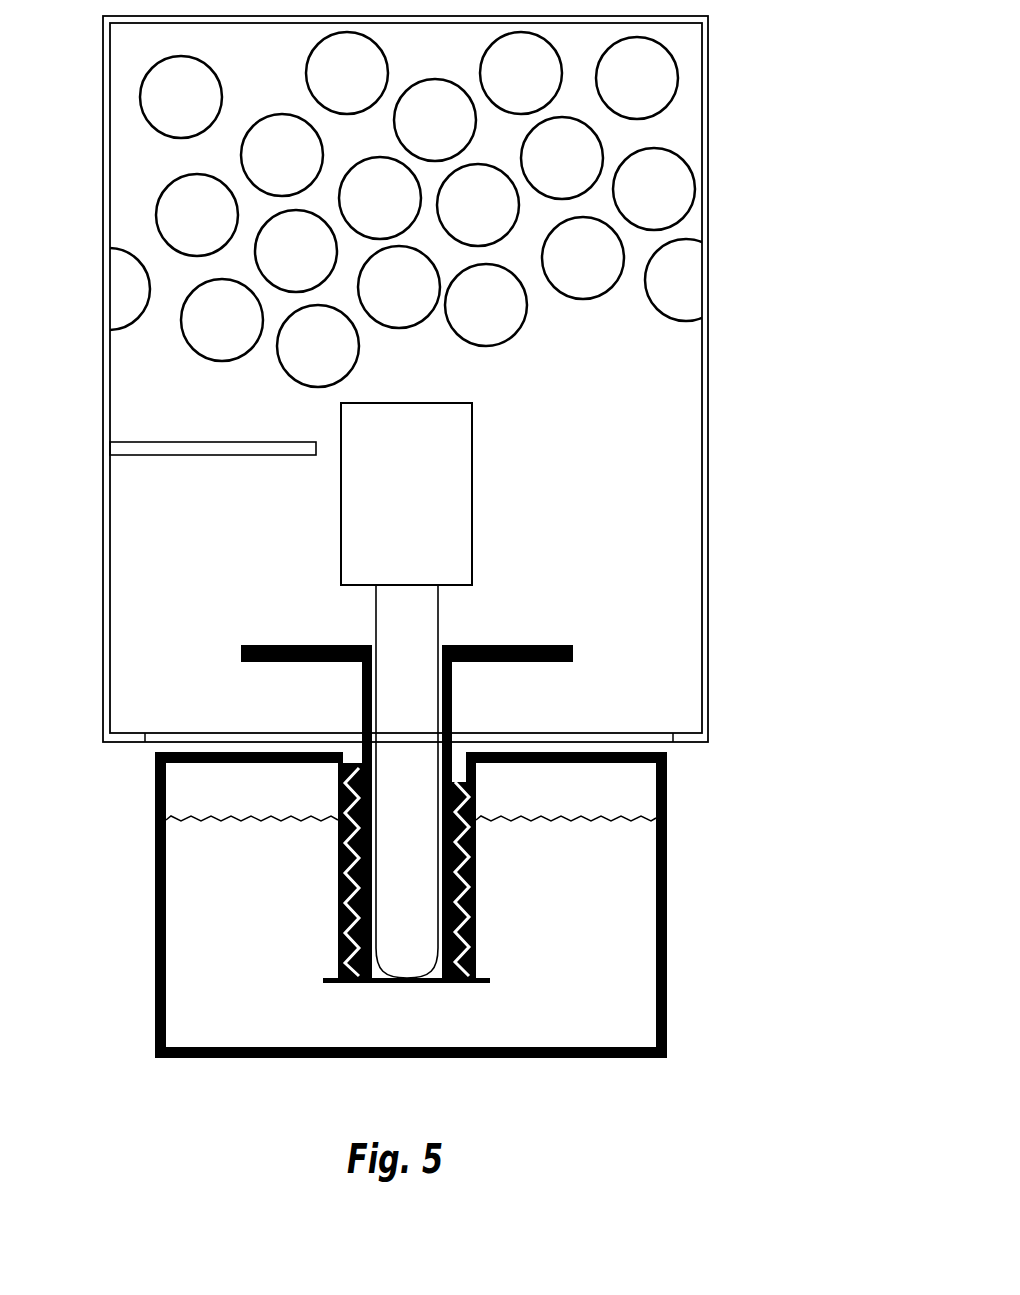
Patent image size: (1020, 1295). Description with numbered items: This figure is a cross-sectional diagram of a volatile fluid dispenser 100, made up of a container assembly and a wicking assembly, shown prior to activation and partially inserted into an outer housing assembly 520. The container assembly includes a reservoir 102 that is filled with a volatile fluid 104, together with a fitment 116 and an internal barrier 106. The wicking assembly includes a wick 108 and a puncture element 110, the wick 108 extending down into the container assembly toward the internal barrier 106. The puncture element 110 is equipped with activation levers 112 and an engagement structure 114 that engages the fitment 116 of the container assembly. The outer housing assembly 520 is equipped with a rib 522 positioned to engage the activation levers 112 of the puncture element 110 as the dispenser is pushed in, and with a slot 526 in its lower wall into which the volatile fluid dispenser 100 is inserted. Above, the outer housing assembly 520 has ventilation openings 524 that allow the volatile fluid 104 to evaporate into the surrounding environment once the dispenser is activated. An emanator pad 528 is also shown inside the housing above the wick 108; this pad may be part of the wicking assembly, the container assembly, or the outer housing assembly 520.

The volatile fluid dispenser 100 is at (518, 905).
The reservoir 102 is at (592, 793).
The volatile fluid 104 is at (464, 1033).
The internal barrier 106 is at (378, 982).
The wick 108 is at (400, 867).
The puncture element 110 is at (338, 890).
The activation levers 112 is at (241, 652).
The engagement structure 114 is at (478, 955).
The fitment 116 is at (338, 947).
The outer housing assembly 520 is at (705, 425).
The rib 522 is at (194, 448).
The ventilation openings 524 is at (653, 188).
The slot 526 is at (625, 737).
The emanator pad 528 is at (441, 489).